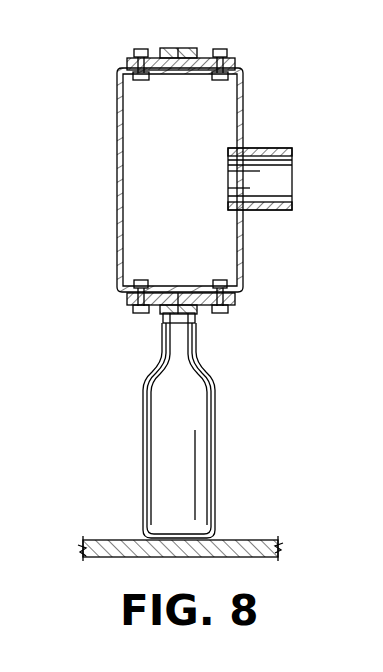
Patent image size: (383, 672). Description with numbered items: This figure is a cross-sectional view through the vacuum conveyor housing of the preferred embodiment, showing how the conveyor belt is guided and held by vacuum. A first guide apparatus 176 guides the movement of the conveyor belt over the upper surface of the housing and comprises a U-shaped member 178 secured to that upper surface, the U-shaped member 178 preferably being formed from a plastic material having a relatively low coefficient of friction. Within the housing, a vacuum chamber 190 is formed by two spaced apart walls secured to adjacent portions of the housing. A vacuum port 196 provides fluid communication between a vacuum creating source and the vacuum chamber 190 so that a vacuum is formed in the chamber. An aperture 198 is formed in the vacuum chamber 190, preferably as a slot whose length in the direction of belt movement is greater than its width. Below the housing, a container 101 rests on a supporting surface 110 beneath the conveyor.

The first guide apparatus 176 is at (103, 92).
The U-shaped member 178 is at (229, 58).
The vacuum port 196 is at (248, 148).
The vacuum chamber 190 is at (192, 250).
The aperture 198 is at (180, 287).
The bottle 101 is at (155, 470).
The support plate 110 is at (236, 548).